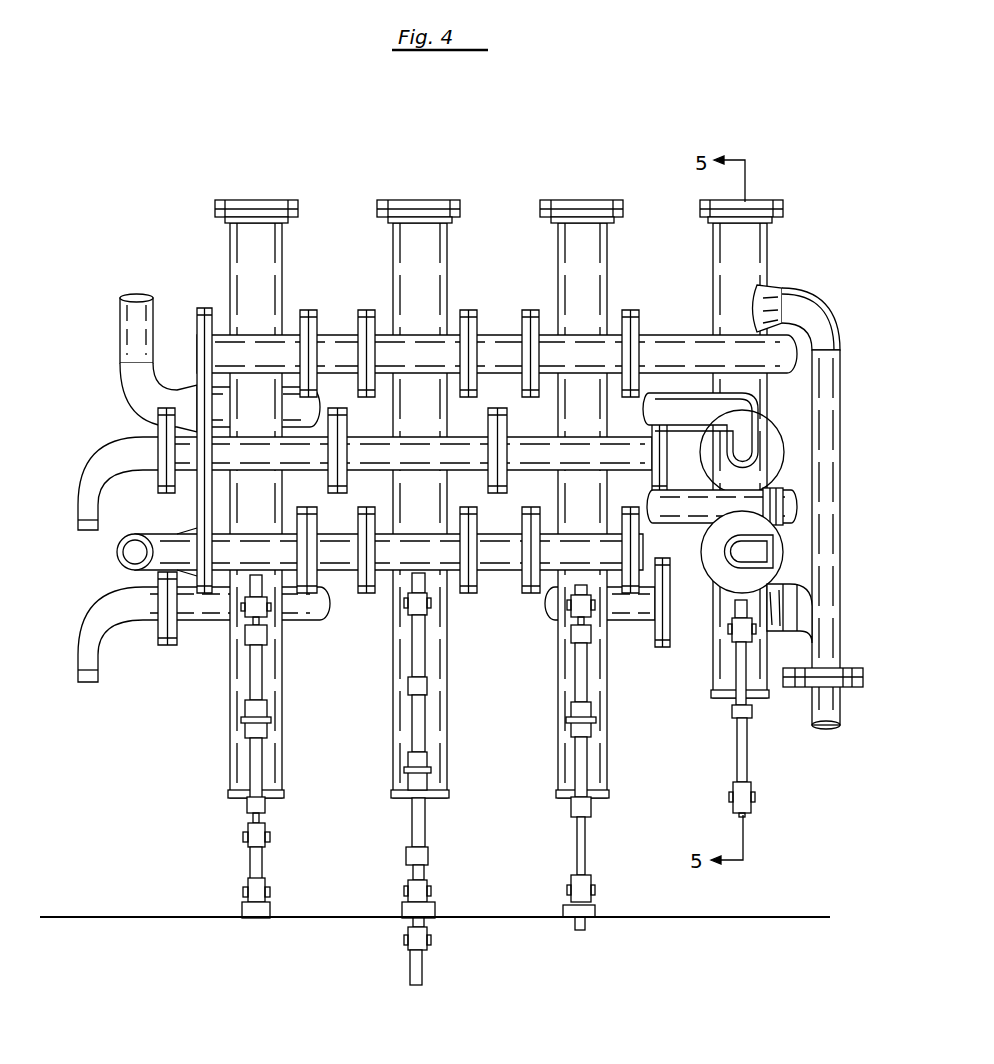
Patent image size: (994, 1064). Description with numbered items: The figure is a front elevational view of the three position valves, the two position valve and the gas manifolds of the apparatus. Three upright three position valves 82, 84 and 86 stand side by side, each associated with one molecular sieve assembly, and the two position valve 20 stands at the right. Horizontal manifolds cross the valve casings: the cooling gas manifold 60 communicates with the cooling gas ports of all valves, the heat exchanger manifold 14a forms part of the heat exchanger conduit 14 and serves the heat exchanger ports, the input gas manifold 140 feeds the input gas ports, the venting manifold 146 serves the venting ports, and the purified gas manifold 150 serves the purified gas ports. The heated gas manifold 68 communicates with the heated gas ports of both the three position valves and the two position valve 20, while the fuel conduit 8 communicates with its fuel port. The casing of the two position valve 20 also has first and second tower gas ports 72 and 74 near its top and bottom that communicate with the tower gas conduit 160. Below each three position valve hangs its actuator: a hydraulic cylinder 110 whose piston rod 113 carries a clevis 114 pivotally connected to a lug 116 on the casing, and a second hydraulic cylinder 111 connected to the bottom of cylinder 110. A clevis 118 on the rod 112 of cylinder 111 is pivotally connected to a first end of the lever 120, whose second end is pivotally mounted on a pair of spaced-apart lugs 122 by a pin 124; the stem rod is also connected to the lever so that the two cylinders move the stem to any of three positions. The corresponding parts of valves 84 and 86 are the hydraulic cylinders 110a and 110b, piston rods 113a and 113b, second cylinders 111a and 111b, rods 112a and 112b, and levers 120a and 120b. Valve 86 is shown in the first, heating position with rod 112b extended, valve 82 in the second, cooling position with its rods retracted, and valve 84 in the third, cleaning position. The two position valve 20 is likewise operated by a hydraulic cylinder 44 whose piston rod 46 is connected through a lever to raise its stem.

The fuel conduit 8 is at (760, 552).
The heat exchanger conduit 14 is at (750, 433).
The heat exchanger manifold 14a is at (120, 330).
The two position valve 20 is at (772, 249).
The hydraulic cylinder 44 is at (738, 668).
The piston rod 46 is at (740, 752).
The cooling gas manifold 60 is at (684, 345).
The heated gas manifold 68 is at (664, 513).
The first tower gas port 72 is at (775, 290).
The second tower gas port 74 is at (771, 619).
The three position valve 82 is at (228, 707).
The three position valve 84 is at (395, 666).
The three position valve 86 is at (604, 690).
The hydraulic cylinder 110 is at (248, 674).
The hydraulic cylinder 110a is at (414, 720).
The hydraulic cylinder 110b is at (576, 678).
The second hydraulic cylinder 111 is at (255, 758).
The second hydraulic cylinder 111a is at (415, 808).
The second hydraulic cylinder 111b is at (578, 762).
The rod 112 is at (250, 818).
The rod 112a is at (415, 870).
The rod 112b is at (578, 843).
The piston rod 113 is at (246, 622).
The piston rod 113a is at (420, 650).
The piston rod 113b is at (572, 620).
The clevis 114 is at (268, 612).
The lug 116 is at (252, 583).
The clevis 118 is at (245, 835).
The lever 120 is at (250, 862).
The lever 120a is at (420, 955).
The lever 120b is at (585, 892).
The lugs 122 is at (268, 902).
The pin 124 is at (246, 889).
The input gas manifold 140 is at (105, 600).
The venting manifold 146 is at (118, 554).
The purified gas manifold 150 is at (110, 446).
The tower gas conduit 160 is at (832, 460).